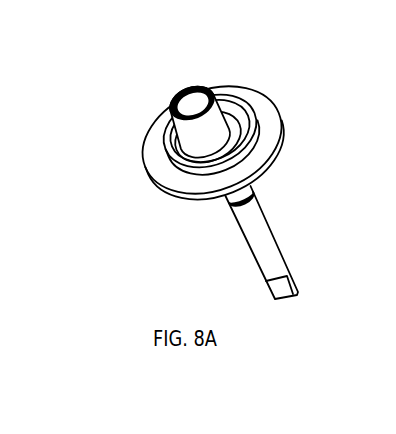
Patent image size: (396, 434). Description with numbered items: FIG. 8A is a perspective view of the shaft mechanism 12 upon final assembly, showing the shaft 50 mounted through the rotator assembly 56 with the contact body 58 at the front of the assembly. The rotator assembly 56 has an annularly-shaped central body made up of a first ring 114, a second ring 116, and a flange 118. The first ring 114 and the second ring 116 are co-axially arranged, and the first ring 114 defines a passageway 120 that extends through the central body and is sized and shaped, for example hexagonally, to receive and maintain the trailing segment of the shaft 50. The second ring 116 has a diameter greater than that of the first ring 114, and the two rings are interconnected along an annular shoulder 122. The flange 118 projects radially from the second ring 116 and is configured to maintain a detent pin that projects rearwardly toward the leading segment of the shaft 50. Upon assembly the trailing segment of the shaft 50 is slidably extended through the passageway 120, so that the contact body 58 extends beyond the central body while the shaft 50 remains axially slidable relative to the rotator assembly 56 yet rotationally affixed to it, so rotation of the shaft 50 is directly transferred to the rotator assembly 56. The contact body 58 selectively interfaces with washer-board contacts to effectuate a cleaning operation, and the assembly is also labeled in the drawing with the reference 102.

The shaft mechanism 12 is at (218, 169).
The shaft 50 is at (262, 260).
The rotator assembly 56 is at (275, 87).
The contact body 58 is at (212, 88).
The cap body 102 is at (142, 182).
The first ring 114 is at (280, 138).
The second ring 116 is at (267, 148).
The flange 118 is at (270, 182).
The passageway 120 is at (234, 97).
The annular shoulder 122 is at (157, 147).